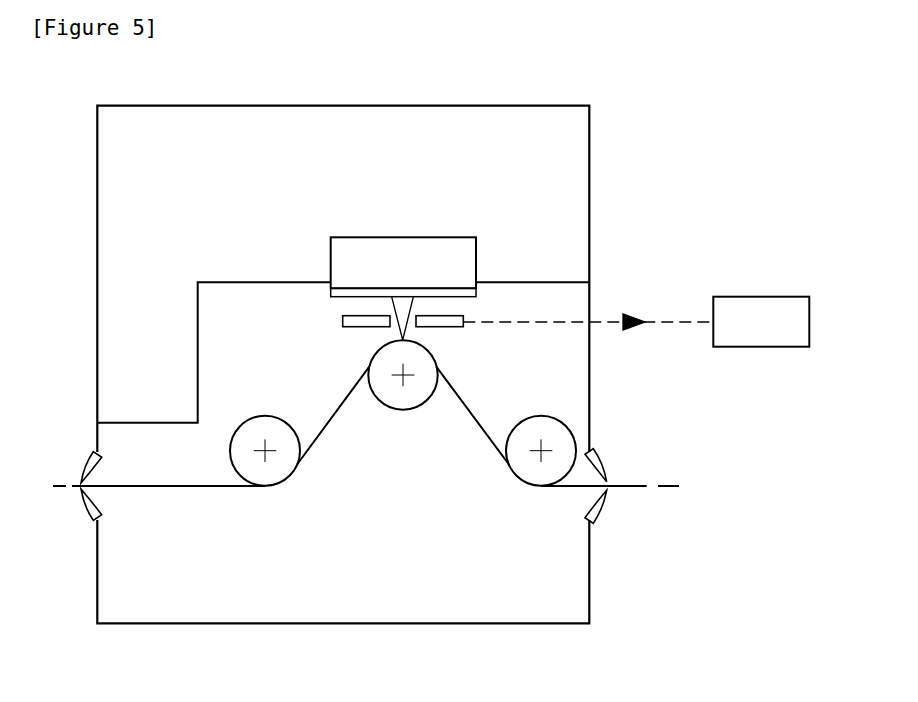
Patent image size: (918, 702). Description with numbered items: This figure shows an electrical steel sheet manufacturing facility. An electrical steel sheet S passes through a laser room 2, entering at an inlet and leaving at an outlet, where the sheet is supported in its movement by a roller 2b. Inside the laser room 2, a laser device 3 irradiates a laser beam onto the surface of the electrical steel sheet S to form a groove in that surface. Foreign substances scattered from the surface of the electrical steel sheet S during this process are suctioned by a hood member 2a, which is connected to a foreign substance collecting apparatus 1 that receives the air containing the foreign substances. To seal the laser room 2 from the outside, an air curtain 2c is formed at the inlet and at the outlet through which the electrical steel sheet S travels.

The foreign substance collecting apparatus 1 is at (770, 336).
The laser room 2 is at (440, 508).
The hood member 2a is at (355, 322).
The roller 2b is at (270, 470).
The air curtain 2c is at (598, 507).
The laser device 3 is at (455, 257).
The electrical steel sheet S is at (179, 487).